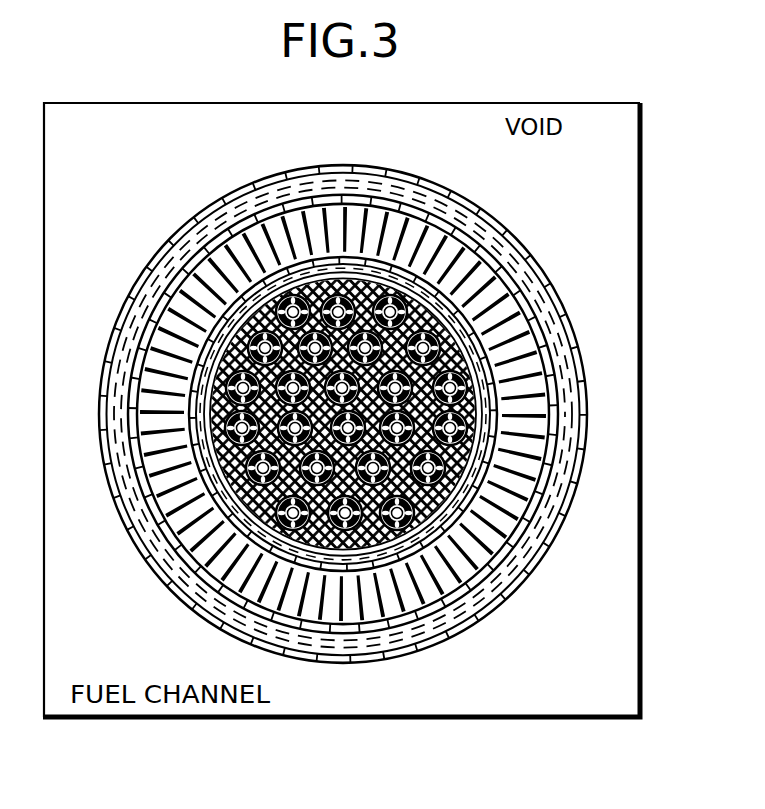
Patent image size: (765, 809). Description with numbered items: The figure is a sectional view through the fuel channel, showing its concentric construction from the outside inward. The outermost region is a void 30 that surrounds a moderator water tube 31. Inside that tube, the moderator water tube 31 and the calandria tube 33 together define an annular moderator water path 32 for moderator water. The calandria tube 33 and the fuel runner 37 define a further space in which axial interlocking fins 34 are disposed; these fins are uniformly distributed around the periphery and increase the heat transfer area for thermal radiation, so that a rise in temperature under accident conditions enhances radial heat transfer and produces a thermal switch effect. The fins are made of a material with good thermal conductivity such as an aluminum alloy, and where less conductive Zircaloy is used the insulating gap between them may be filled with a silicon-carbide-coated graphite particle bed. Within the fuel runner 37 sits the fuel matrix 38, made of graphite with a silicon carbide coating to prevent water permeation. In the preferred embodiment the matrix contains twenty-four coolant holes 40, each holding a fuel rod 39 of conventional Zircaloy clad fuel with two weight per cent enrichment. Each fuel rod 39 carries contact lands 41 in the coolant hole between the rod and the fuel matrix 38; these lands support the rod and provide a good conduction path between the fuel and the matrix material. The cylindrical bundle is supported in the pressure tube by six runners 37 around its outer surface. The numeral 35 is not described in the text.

The void 30 is at (642, 197).
The moderator water tube 31 is at (549, 277).
The moderator water path 32 is at (570, 336).
The calandria tube 33 is at (572, 387).
The axial interlocking fins 34 is at (523, 503).
The inner segmented ring 35 is at (495, 578).
The fuel runner 37 is at (445, 610).
The fuel matrix 38 is at (167, 270).
The fuel rods 39 is at (145, 346).
The coolant holes 40 is at (163, 475).
The contact lands 41 is at (190, 593).